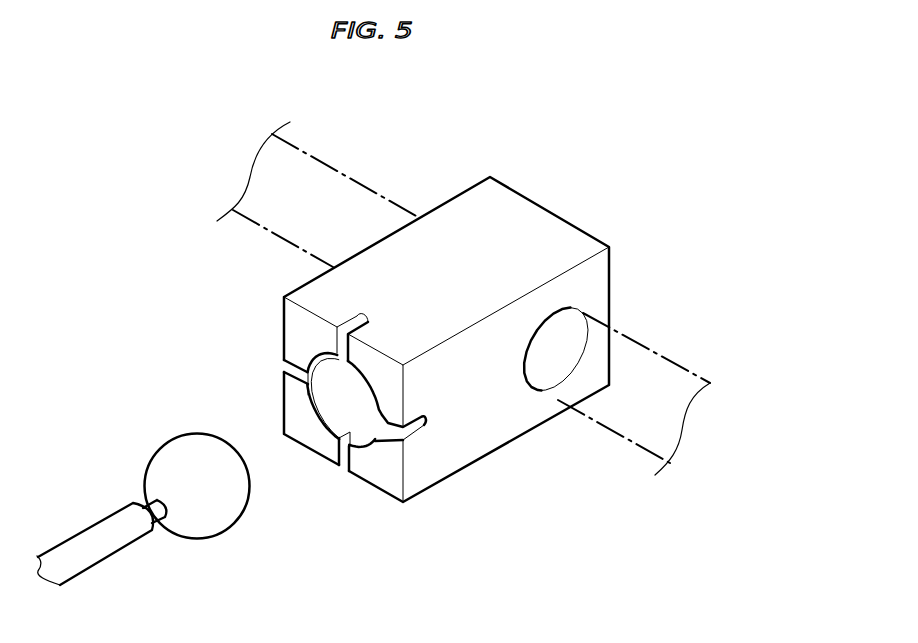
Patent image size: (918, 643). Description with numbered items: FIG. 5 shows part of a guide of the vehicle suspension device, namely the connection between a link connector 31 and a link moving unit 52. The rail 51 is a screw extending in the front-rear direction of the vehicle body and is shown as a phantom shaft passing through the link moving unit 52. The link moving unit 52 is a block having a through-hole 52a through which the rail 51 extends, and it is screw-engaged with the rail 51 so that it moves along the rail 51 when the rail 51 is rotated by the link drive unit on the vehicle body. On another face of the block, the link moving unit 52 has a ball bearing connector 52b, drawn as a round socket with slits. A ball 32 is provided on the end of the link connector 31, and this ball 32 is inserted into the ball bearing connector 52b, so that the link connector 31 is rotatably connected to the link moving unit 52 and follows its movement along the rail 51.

The link connector 31 is at (95, 538).
The ball 32 is at (180, 452).
The rail 51 is at (608, 433).
The link moving unit 52 is at (533, 220).
The through-hole 52a is at (532, 338).
The ball bearing connector 52b is at (332, 432).